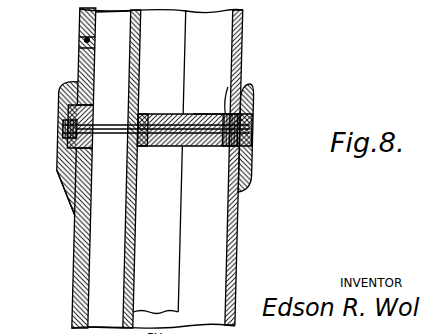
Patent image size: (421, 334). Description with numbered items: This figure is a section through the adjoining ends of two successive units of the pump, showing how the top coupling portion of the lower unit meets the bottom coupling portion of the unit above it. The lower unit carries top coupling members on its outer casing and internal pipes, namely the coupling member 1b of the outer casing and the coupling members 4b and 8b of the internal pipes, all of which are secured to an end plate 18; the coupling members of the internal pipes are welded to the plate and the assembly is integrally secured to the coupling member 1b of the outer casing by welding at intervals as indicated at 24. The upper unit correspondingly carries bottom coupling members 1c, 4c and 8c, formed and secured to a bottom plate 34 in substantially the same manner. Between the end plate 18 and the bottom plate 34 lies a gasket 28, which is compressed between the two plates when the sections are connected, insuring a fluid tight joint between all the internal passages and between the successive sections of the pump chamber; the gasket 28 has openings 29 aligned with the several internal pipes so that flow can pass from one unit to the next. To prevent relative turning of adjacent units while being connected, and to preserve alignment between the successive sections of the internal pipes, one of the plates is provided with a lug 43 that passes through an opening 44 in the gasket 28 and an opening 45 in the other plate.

The bottom coupling member of outer casing 1c is at (80, 58).
The top coupling member of outer casing 1b is at (77, 277).
The bottom coupling member of internal pipe 8c is at (112, 42).
The top coupling member of internal pipe 8b is at (106, 285).
The bottom coupling member of internal pipe 4c is at (184, 50).
The top coupling member of internal pipe 4b is at (188, 242).
The bottom plate 34 is at (171, 114).
The opening in plate 45 is at (206, 114).
The end plate 18 is at (246, 181).
The lug 43 is at (242, 83).
The opening in gasket 44 is at (248, 128).
The gasket opening 29 is at (113, 130).
The weld 24 is at (80, 224).
The gasket 28 is at (162, 147).